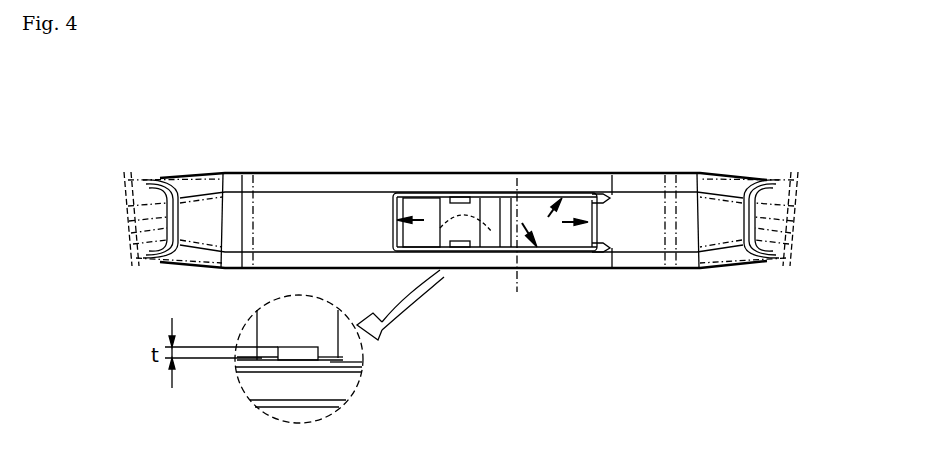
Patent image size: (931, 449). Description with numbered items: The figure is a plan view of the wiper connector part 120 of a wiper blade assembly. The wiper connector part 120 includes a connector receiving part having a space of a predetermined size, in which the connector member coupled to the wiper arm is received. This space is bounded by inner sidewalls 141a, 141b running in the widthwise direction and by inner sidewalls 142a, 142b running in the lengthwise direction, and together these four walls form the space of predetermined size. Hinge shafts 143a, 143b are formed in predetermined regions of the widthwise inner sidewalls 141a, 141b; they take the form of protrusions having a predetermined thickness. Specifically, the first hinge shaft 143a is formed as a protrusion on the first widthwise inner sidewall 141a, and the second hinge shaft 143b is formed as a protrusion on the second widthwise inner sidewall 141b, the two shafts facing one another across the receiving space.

The wiper connector part 120 is at (461, 180).
The first widthwise inner sidewall 141a is at (554, 212).
The second widthwise inner sidewall 141b is at (512, 215).
The lengthwise inner sidewall 142a is at (426, 215).
The lengthwise inner sidewall 142b is at (584, 226).
The first hinge shaft 143a is at (456, 195).
The second hinge shaft 143b is at (458, 250).